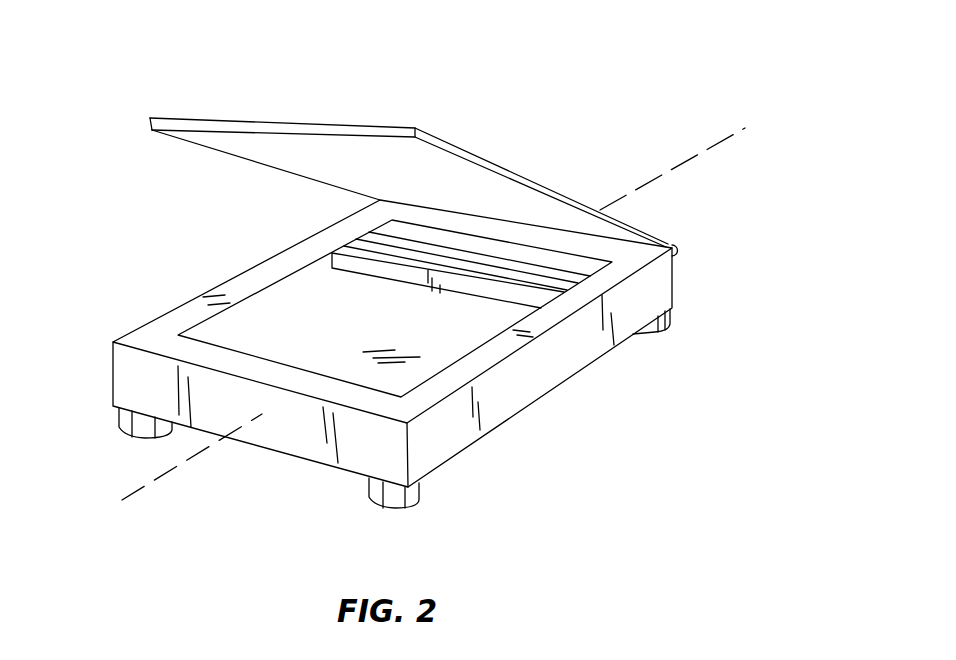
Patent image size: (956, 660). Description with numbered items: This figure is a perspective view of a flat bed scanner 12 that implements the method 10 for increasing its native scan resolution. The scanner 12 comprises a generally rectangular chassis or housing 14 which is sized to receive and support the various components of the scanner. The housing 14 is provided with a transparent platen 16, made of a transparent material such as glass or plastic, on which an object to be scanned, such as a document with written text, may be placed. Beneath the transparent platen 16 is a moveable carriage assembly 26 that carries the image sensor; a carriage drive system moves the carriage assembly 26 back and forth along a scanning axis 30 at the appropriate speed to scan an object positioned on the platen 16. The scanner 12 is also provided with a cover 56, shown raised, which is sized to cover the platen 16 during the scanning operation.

The method 10 is at (494, 71).
The flat bed scanner 12 is at (101, 347).
The housing 14 is at (113, 382).
The transparent platen 16 is at (293, 313).
The moveable carriage assembly 26 is at (410, 296).
The scanning axis 30 is at (138, 491).
The cover 56 is at (208, 148).